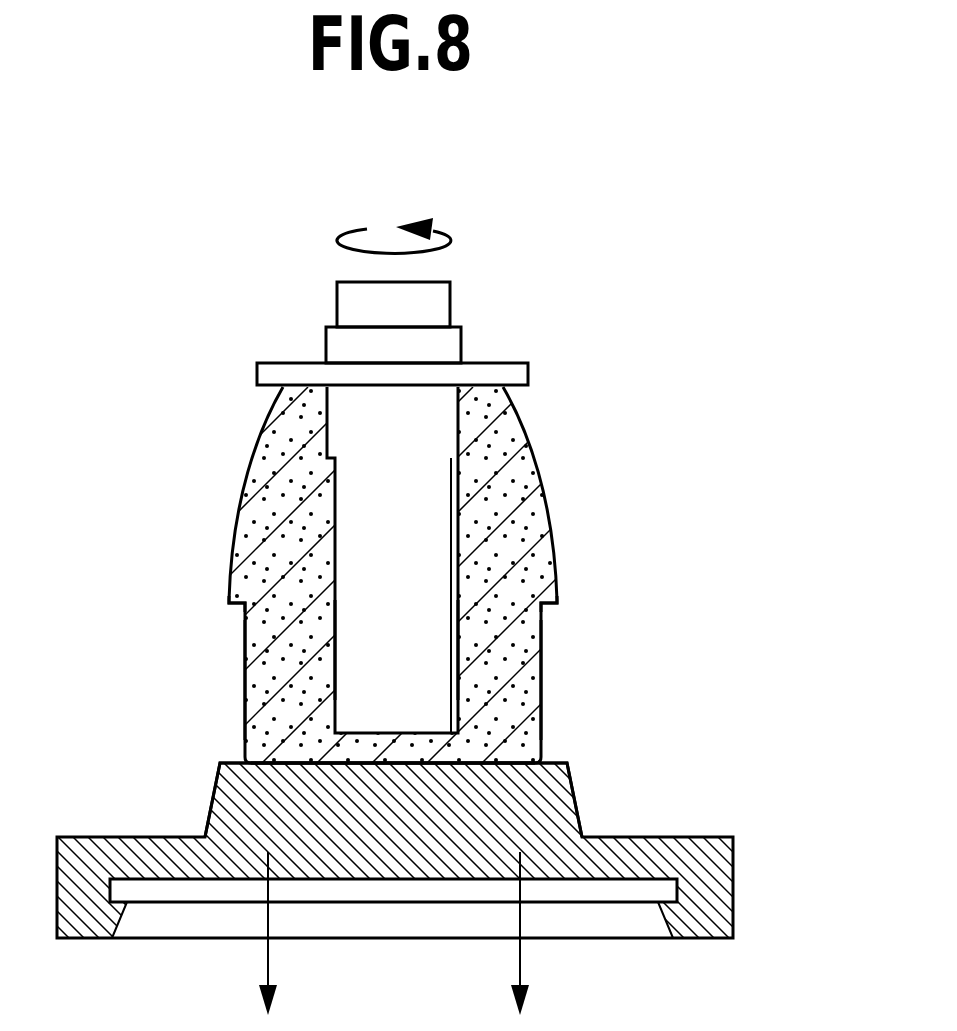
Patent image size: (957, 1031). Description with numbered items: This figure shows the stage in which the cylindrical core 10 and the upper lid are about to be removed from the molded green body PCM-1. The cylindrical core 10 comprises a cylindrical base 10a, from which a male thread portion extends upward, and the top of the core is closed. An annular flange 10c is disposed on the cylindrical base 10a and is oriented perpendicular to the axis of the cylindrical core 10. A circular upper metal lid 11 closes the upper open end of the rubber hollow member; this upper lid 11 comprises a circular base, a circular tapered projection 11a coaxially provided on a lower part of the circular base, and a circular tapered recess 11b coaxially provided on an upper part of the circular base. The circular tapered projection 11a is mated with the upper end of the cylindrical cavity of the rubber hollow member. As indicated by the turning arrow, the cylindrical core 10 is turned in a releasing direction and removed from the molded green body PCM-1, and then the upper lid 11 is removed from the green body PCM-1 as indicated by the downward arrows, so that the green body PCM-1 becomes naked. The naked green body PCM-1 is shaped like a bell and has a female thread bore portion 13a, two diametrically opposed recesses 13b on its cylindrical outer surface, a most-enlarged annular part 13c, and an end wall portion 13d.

The cylindrical core 10 is at (470, 516).
The cylindrical base 10a is at (430, 428).
The annular flange 10c is at (505, 373).
The circular upper metal lid 11 is at (705, 890).
The circular tapered projection 11a is at (578, 782).
The circular tapered recess 11b is at (663, 907).
The female thread bore portion 13a is at (472, 651).
The diametrically opposed two recesses 13b is at (543, 687).
The most-enlarged annular part 13c is at (557, 607).
The end wall portion 13d is at (403, 748).
The molded green body PCM-1 is at (498, 562).